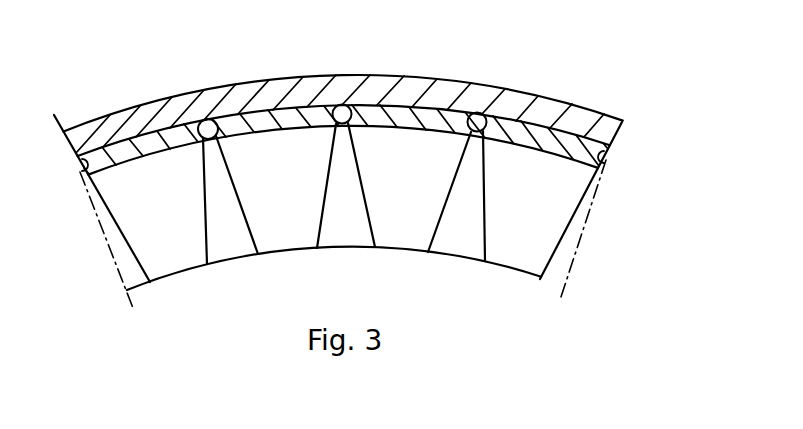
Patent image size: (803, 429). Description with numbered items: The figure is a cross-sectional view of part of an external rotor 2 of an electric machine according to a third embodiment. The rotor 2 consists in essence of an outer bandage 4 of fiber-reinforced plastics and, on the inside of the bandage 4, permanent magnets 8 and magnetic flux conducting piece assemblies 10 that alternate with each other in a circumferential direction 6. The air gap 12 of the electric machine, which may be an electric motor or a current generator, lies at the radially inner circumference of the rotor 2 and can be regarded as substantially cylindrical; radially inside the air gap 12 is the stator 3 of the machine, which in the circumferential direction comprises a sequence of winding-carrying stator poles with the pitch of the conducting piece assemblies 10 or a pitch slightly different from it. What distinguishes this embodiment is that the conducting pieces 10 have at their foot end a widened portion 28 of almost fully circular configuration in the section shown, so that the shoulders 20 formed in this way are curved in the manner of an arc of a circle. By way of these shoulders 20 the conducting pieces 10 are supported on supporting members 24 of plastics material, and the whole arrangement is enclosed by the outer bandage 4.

The rotor 2 is at (497, 92).
The stator 3 is at (555, 148).
The outer bandage 4 is at (463, 102).
The circumferential direction 6 is at (605, 208).
The permanent magnets 8 is at (132, 225).
The magnetic flux conducting piece assemblies 10 is at (247, 256).
The air gap 12 is at (150, 310).
The shoulders 20 is at (203, 130).
The supporting members 24 is at (443, 127).
The widened portion 28 is at (343, 118).